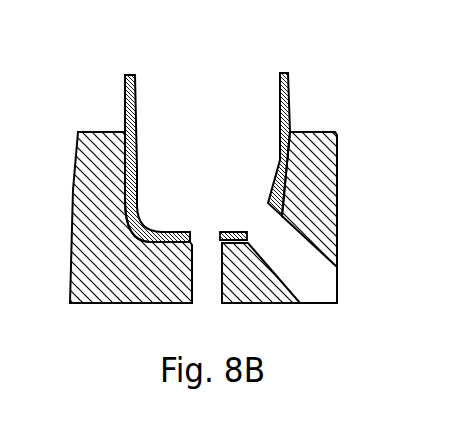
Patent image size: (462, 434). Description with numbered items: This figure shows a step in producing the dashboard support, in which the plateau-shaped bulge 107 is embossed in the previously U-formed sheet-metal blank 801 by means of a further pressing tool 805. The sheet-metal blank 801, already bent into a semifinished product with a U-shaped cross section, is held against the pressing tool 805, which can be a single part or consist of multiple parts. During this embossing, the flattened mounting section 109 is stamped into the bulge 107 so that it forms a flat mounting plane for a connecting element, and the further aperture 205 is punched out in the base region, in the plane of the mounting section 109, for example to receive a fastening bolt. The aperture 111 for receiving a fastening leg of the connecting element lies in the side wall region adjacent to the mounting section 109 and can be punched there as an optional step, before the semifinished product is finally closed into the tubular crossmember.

The plateau-shaped bulge 107 is at (151, 213).
The further aperture 205 is at (203, 247).
The mounting section 109 is at (227, 228).
The sheet-metal blank 801 is at (288, 98).
The further pressing tool 805 is at (330, 230).
The aperture 111 is at (257, 223).